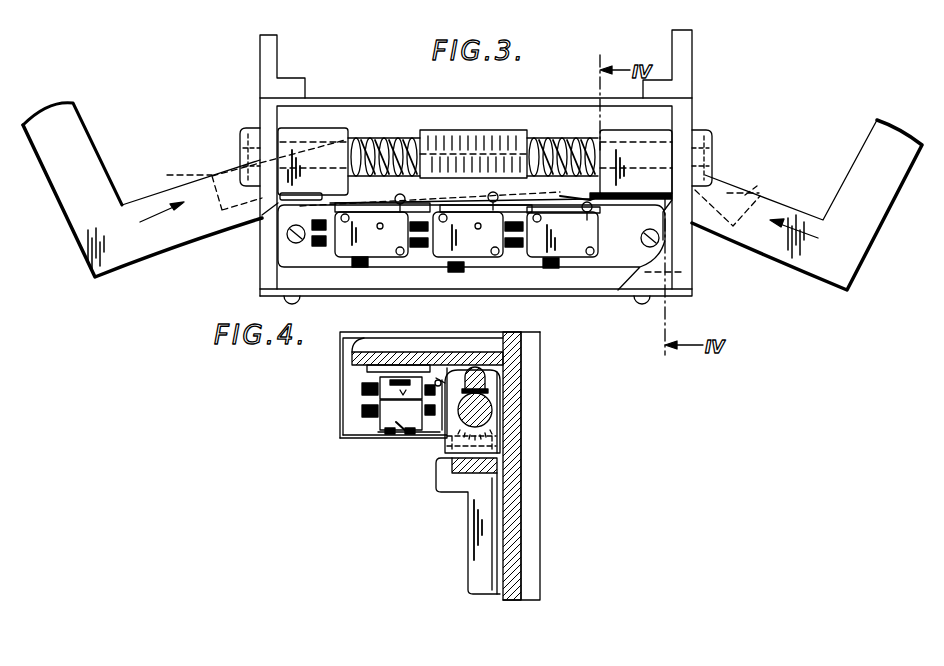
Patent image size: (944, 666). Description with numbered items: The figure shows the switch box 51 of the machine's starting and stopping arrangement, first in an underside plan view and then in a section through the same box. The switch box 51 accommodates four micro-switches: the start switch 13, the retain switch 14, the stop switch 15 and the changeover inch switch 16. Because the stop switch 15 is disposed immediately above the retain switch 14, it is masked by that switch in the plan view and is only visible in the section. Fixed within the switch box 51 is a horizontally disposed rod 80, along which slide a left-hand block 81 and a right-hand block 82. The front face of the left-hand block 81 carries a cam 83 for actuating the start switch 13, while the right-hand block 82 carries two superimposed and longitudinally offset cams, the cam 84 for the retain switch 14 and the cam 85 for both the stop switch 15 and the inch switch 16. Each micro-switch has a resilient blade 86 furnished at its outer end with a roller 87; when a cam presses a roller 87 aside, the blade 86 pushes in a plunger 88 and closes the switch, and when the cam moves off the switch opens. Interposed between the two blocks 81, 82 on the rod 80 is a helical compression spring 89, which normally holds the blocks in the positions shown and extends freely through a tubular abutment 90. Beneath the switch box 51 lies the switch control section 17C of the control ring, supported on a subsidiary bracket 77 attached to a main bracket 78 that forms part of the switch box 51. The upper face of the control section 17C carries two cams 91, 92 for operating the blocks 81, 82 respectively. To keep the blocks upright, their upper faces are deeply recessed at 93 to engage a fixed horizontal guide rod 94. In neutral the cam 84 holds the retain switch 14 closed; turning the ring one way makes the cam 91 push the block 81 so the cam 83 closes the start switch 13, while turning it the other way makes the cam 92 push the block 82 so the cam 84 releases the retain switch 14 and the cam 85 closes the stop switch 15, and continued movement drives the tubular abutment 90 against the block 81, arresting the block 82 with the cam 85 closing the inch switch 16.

In FIG. 3, the start switch 13 is at (345, 247).
In FIG. 3, the retain switch 14 is at (592, 238).
In FIG. 4, the retain switch 14 is at (386, 418).
In FIG. 4, the stop switch 15 is at (393, 388).
In FIG. 3, the inch switch 16 is at (445, 248).
In FIG. 3, the switch control section 17C is at (177, 227).
In FIG. 4, the switch control section 17C is at (500, 467).
In FIG. 3, the switch box 51 is at (558, 290).
In FIG. 4, the switch box 51 is at (337, 417).
In FIG. 4, the subsidiary bracket 77 is at (480, 588).
In FIG. 4, the main bracket 78 is at (516, 600).
In FIG. 3, the rod 80 is at (415, 140).
In FIG. 4, the rod 80 is at (484, 412).
In FIG. 3, the left-hand block 81 is at (318, 133).
In FIG. 3, the right-hand block 82 is at (670, 137).
In FIG. 4, the right-hand block 82 is at (492, 394).
In FIG. 3, the cam 83 is at (287, 205).
In FIG. 3, the cam 84 is at (592, 201).
In FIG. 4, the cam 84 is at (405, 432).
In FIG. 3, the cam 85 is at (675, 232).
In FIG. 4, the cam 85 is at (441, 382).
In FIG. 3, the resilient blade 86 is at (392, 203).
In FIG. 3, the roller 87 is at (406, 199).
In FIG. 4, the roller 87 is at (408, 440).
In FIG. 3, the plunger 88 is at (606, 238).
In FIG. 3, the helical compression spring 89 is at (378, 137).
In FIG. 3, the tubular abutment 90 is at (455, 130).
In FIG. 3, the cam 91 is at (245, 175).
In FIG. 4, the cam 91 is at (498, 451).
In FIG. 3, the cam 92 is at (807, 205).
In FIG. 4, the recess 93 is at (490, 392).
In FIG. 4, the guide rod 94 is at (486, 376).